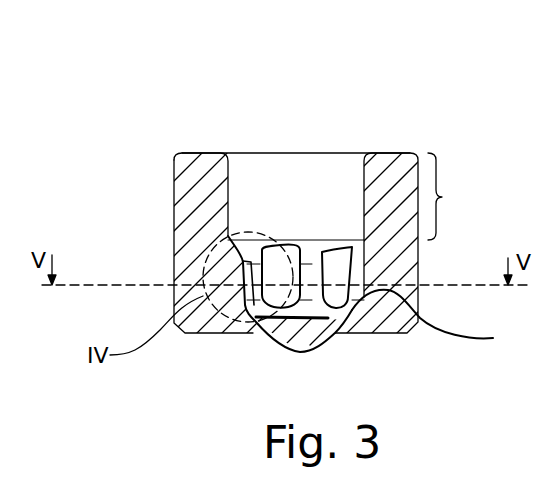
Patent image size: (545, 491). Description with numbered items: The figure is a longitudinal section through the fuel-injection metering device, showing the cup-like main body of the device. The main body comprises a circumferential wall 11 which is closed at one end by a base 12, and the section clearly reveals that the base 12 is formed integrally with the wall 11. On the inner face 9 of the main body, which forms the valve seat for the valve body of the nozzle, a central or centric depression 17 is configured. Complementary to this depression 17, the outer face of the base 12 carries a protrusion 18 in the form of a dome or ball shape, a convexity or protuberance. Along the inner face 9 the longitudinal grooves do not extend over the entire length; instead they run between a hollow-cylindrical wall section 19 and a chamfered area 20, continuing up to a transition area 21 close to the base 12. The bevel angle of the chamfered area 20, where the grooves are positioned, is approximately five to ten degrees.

The inner face 9 is at (303, 227).
The circumferential wall 11 is at (397, 193).
The base 12 is at (333, 333).
The depression 17 is at (303, 330).
The protrusion 18 is at (312, 350).
The hollow-cylindrical wall section 19 is at (450, 196).
The chamfered area 20 is at (355, 257).
The transition area 21 is at (438, 320).